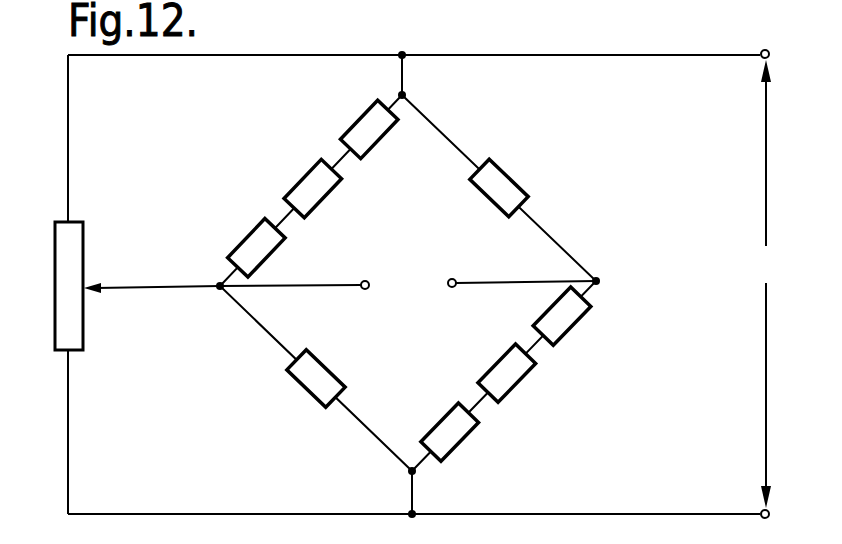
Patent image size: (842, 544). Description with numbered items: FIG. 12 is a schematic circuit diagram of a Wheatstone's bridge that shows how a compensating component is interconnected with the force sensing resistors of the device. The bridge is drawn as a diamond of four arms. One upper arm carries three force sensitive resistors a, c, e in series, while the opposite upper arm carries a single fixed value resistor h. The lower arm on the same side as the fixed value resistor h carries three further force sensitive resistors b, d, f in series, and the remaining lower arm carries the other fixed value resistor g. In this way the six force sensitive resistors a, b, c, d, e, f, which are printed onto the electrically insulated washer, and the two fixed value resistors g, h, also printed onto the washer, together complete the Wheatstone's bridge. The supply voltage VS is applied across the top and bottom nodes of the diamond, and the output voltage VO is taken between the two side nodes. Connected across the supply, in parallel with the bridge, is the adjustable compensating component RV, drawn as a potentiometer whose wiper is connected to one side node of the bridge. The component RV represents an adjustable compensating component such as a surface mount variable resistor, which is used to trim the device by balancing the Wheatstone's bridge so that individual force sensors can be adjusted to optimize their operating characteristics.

The force sensitive resistor a is at (252, 242).
The force sensitive resistor b is at (451, 437).
The force sensitive resistor c is at (310, 186).
The force sensitive resistor d is at (507, 376).
The force sensitive resistor e is at (365, 128).
The force sensitive resistor f is at (562, 318).
The fixed value resistor g is at (315, 382).
The fixed value resistor h is at (499, 184).
The adjustable compensating component RV is at (137, 286).
The output voltage VO is at (408, 287).
The supply voltage VS is at (771, 284).